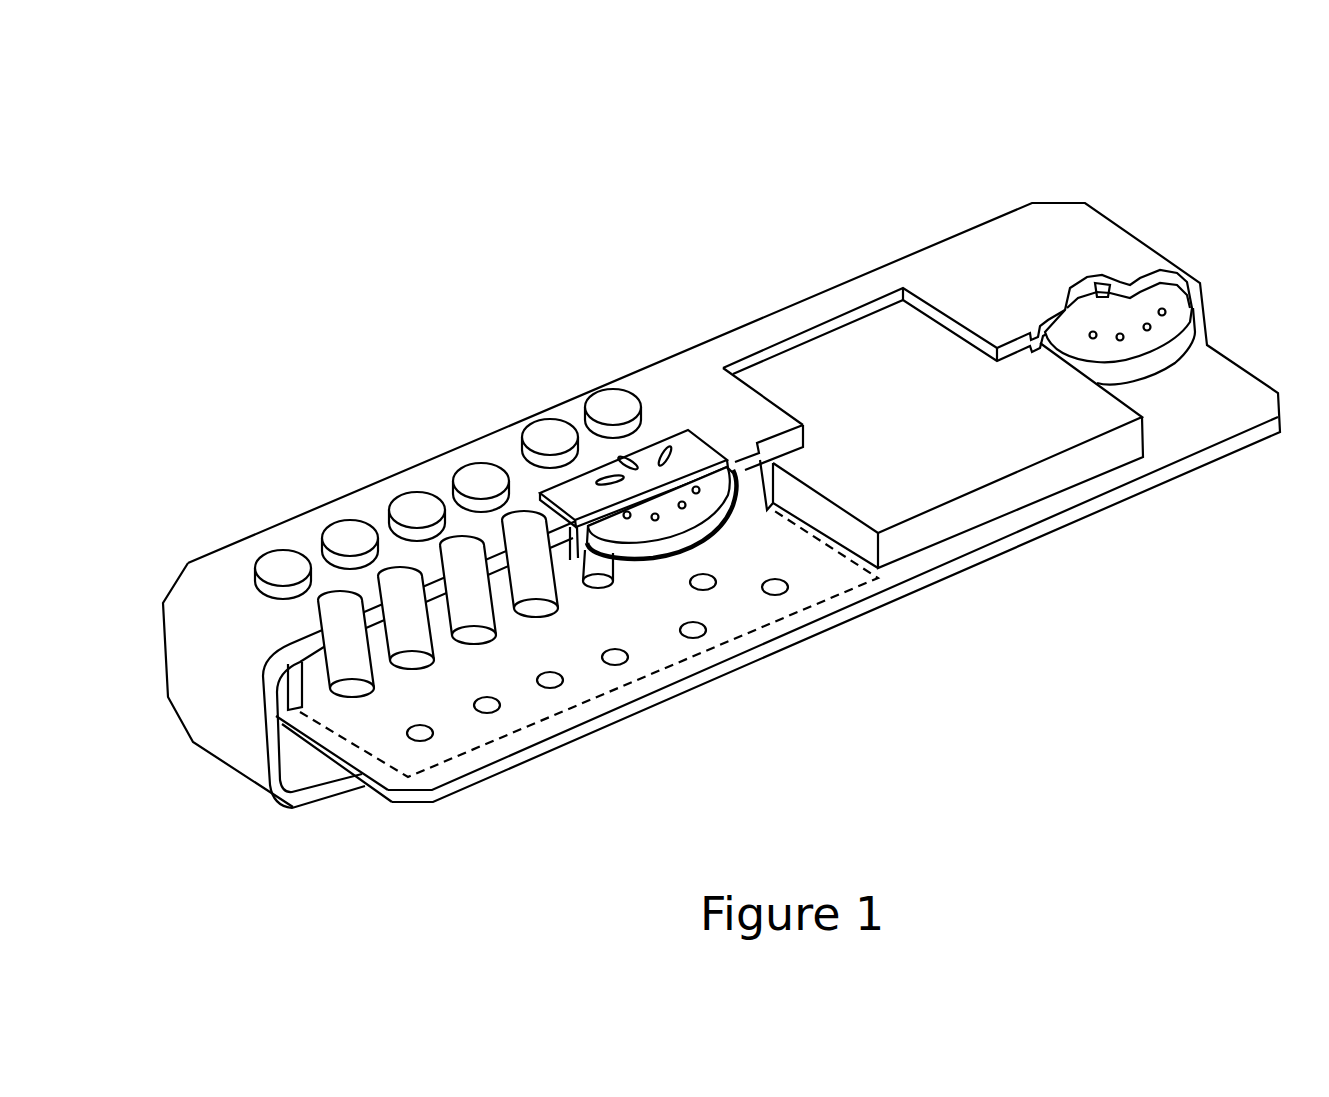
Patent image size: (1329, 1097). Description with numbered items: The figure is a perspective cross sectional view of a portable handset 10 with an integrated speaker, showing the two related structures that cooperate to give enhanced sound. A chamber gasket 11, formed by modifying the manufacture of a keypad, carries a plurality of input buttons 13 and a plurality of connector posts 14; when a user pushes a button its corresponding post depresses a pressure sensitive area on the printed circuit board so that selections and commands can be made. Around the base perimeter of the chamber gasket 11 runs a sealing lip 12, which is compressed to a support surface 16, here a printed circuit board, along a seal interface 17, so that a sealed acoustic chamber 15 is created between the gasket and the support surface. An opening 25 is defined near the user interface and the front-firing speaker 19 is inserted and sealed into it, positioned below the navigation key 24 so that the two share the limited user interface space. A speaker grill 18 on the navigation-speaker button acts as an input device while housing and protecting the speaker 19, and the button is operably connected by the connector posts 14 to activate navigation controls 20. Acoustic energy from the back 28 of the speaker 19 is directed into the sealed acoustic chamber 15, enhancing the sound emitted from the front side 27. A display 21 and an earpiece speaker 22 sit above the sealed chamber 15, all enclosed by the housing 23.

The portable handset 10 is at (717, 499).
The chamber gasket 11 is at (380, 615).
The sealing lip 12 is at (297, 687).
The input buttons 13 is at (332, 520).
The connector posts 14 is at (477, 612).
The sealed acoustic chamber 15 is at (386, 663).
The support surface 16 is at (1125, 492).
The seal interface 17 is at (350, 743).
The speaker grill 18 is at (596, 475).
The speaker 19 is at (650, 494).
The navigation controls 20 is at (605, 587).
The display 21 is at (975, 502).
The earpiece speaker 22 is at (1157, 296).
The housing 23 is at (258, 775).
The navigation key 24 is at (660, 440).
The opening 25 is at (732, 528).
The front side 27 is at (682, 490).
The back 28 is at (655, 556).